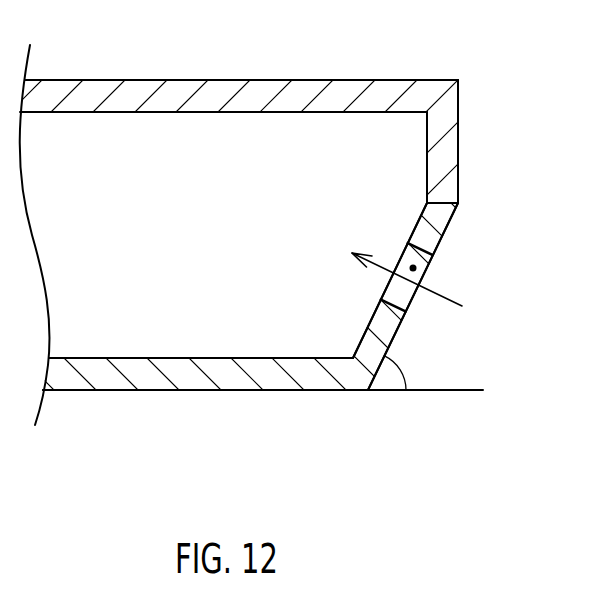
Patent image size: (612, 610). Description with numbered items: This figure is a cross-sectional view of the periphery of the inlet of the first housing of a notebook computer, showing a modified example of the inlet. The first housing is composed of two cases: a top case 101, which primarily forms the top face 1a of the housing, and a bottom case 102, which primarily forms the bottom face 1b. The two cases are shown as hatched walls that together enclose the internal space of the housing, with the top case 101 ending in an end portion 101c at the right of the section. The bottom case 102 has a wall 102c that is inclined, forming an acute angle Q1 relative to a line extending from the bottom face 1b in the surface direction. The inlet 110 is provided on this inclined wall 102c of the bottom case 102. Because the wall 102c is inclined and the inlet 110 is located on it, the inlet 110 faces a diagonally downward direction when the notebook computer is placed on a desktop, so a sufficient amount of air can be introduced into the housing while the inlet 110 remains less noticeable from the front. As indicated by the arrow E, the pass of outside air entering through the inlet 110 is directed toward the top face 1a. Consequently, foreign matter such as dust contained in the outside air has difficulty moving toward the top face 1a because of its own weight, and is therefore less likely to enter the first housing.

The top face 1a is at (168, 80).
The bottom face 1b is at (175, 390).
The top case 101 is at (292, 80).
The end portion of first wall member 101c is at (448, 158).
The bottom case 102 is at (265, 390).
The wall 102c is at (390, 318).
The inlet 110 is at (425, 275).
The arrow E is at (445, 297).
The acute angle Q1 is at (402, 367).